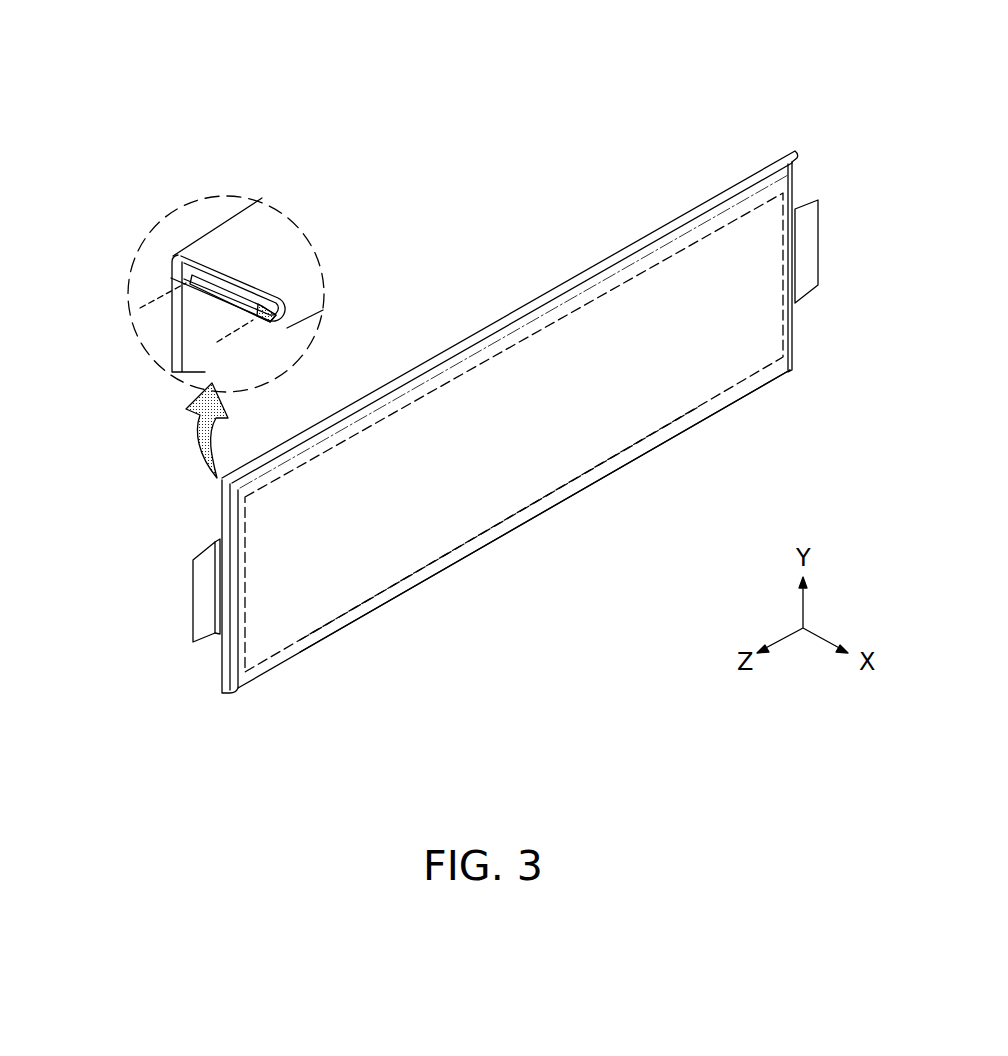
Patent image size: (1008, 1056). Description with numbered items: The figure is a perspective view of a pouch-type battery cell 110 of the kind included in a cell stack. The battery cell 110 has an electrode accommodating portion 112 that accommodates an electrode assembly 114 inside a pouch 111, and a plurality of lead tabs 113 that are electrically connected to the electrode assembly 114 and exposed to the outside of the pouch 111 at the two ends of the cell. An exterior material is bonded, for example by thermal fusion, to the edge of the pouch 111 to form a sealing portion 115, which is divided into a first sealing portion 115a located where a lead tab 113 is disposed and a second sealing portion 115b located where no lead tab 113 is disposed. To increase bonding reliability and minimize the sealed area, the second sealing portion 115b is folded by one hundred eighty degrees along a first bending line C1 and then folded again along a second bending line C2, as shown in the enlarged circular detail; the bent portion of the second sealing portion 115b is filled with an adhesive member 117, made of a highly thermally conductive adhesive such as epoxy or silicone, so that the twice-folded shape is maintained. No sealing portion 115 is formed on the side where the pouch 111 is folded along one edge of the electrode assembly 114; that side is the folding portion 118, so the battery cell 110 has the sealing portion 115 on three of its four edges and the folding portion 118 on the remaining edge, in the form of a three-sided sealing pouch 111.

The battery cell 110 is at (390, 49).
The pouch 111 is at (429, 546).
The electrode accommodating portion 112 is at (636, 297).
The lead tab 113 is at (203, 623).
The electrode assembly 114 is at (710, 416).
The sealing portion 115 is at (797, 93).
The first sealing portion 115a is at (796, 152).
The second sealing portion 115b is at (731, 186).
The adhesive member 117 is at (268, 326).
The folding portion 118 is at (522, 524).
The first bending line C1 is at (155, 297).
The second bending line C2 is at (188, 370).